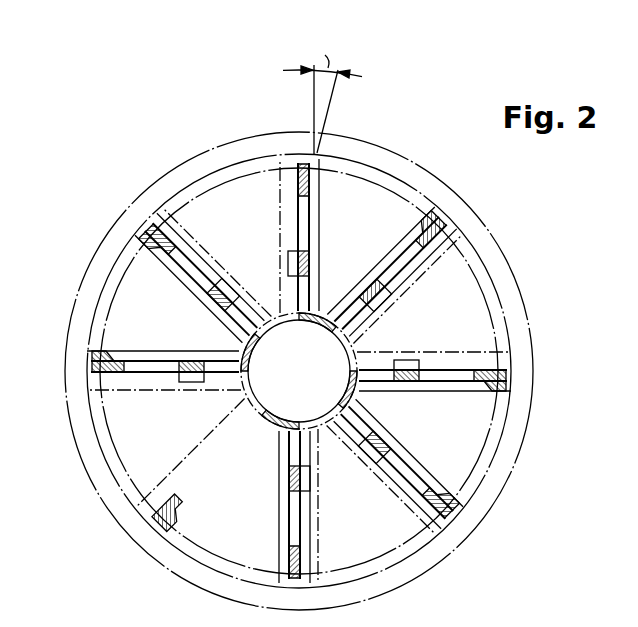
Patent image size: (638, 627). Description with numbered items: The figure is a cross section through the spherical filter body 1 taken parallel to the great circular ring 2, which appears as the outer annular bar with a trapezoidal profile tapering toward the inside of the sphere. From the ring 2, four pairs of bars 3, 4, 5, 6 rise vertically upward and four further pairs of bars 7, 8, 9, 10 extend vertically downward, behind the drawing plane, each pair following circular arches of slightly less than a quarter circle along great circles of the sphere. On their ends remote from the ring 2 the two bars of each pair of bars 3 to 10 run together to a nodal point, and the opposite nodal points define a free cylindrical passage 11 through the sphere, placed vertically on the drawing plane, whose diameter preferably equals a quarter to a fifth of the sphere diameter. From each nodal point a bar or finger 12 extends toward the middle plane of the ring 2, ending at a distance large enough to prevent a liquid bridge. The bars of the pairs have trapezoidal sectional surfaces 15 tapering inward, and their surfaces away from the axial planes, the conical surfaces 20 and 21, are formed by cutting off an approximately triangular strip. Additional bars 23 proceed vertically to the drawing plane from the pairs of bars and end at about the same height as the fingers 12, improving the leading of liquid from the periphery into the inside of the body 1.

The filter body 1 is at (150, 176).
The great circular ring 2 is at (521, 288).
The pair of bars 3 is at (187, 397).
The pair of bars 4 is at (374, 478).
The pair of bars 5 is at (440, 352).
The pair of bars 6 is at (279, 233).
The pair of bars 7 is at (281, 499).
The pair of bars 8 is at (407, 462).
The pair of bars 9 is at (390, 252).
The pair of bars 10 is at (191, 288).
The cylindrical passage 11 is at (270, 393).
The bar or finger 12 is at (313, 331).
The trapezoidal sectional surface 15 is at (294, 183).
The conical surface 20 is at (311, 257).
The conical surface 21 is at (355, 300).
The bar 23 is at (232, 290).